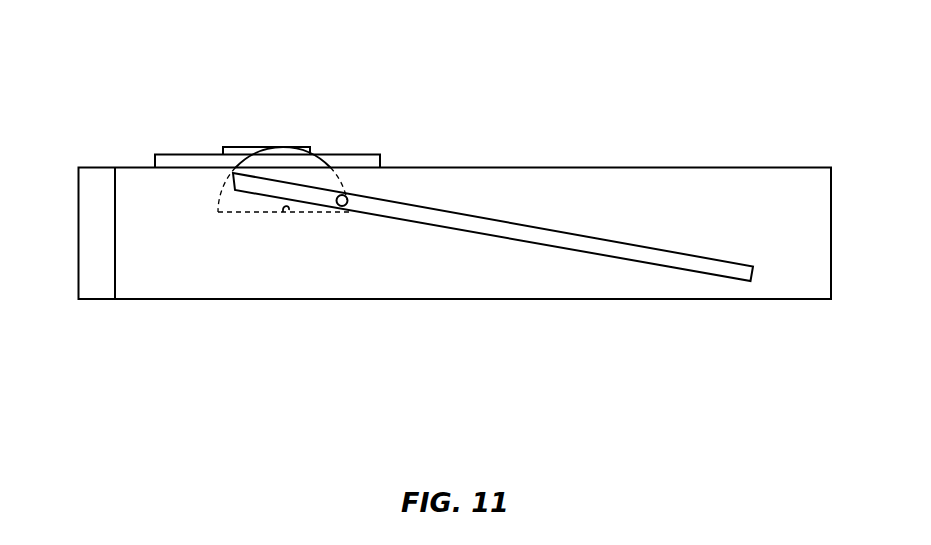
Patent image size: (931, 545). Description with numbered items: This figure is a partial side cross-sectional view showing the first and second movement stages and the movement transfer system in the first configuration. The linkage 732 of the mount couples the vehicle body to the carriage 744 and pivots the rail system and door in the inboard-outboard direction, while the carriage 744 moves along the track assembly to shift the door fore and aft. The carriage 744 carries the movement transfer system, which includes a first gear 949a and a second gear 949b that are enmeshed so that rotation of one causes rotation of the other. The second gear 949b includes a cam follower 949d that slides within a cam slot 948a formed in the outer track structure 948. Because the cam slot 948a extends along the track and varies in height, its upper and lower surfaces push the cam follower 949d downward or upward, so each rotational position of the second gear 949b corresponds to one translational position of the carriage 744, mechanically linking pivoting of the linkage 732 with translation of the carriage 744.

The linkage 732 is at (93, 180).
The carriage 744 is at (186, 162).
The outer track structure 948 is at (584, 190).
The cam slot 948a is at (522, 225).
The first gear 949a is at (247, 150).
The second gear 949b is at (308, 163).
The cam follower 949d is at (344, 195).